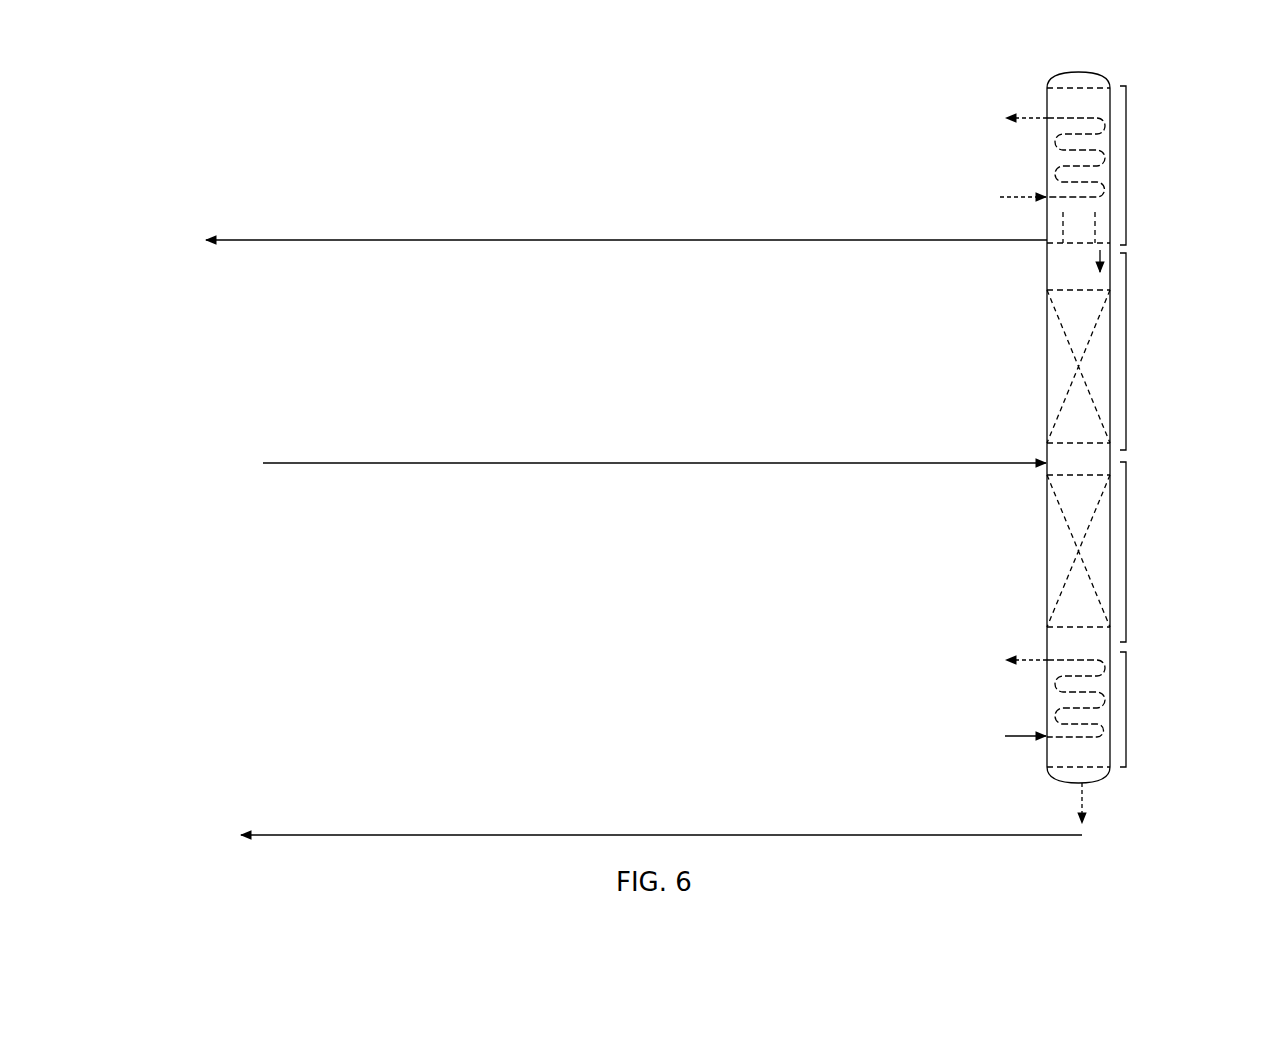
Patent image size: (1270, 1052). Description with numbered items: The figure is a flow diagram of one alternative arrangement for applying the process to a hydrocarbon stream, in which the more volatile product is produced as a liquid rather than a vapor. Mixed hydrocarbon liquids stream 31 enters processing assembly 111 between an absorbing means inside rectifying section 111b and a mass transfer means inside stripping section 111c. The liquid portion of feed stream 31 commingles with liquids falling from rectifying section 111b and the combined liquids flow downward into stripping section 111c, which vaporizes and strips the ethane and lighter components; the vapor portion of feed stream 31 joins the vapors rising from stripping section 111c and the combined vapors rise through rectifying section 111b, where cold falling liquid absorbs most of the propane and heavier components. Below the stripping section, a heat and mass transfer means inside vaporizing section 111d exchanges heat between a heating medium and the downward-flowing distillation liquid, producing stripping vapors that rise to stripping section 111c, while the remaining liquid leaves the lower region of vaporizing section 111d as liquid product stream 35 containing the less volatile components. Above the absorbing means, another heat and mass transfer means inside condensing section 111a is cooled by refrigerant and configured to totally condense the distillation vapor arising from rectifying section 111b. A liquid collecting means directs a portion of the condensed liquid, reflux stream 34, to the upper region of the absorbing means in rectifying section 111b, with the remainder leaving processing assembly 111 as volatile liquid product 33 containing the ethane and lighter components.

The processing assembly 111 is at (1047, 551).
The condensing section 111a is at (1127, 166).
The rectifying section 111b is at (1127, 359).
The stripping section 111c is at (1127, 554).
The vaporizing section 111d is at (1127, 706).
The mixed hydrocarbon liquids stream 31 is at (340, 466).
The volatile liquid product 33 is at (340, 243).
The reflux stream 34 is at (1098, 255).
The liquid product stream 35 is at (343, 838).